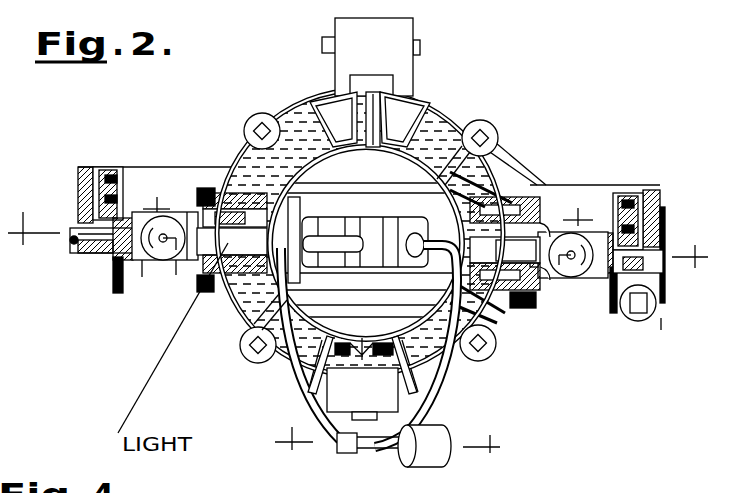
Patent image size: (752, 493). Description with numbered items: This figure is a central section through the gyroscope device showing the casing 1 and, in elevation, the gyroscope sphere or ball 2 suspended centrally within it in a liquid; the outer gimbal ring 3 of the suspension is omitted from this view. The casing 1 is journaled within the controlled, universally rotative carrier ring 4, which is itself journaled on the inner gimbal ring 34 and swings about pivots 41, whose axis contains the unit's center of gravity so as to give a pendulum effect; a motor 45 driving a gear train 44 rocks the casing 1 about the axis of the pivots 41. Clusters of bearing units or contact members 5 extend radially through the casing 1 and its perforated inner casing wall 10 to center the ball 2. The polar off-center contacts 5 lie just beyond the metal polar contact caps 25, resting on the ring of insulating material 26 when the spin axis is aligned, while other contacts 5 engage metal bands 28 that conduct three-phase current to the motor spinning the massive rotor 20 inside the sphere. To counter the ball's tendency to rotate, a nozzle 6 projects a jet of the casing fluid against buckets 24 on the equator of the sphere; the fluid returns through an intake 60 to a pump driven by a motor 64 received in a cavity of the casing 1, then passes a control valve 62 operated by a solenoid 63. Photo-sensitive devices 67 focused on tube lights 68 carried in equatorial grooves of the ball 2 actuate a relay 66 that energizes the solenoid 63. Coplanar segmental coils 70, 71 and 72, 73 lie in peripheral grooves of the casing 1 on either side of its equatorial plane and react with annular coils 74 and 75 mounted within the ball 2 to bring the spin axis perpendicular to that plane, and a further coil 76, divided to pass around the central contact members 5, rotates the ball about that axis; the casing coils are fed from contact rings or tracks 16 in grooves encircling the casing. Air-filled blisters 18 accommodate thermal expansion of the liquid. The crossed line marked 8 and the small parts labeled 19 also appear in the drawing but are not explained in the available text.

The casing 1 is at (220, 188).
The gyroscope sphere 2 is at (366, 243).
The outer gimbal ring 3 is at (358, 251).
The ring 4 is at (127, 290).
The bearing units 5 is at (312, 104).
The nozzle 6 is at (318, 252).
The vertical axis 8 is at (387, 451).
The inner casing wall 10 is at (300, 165).
The contact rings 16 is at (208, 188).
The blisters 18 is at (260, 113).
The bolt 19 is at (547, 226).
The rotor 20 is at (295, 197).
The buckets 24 is at (398, 230).
The metal polar contact caps 25 is at (395, 150).
The ring of insulating material 26 is at (360, 150).
The metal bands 28 is at (500, 160).
The inner gimbal ring 34 is at (78, 175).
The pivots 41 is at (80, 255).
The gear train 44 is at (657, 302).
The motor 45 is at (640, 321).
The intake 60 is at (455, 318).
The control valve 62 is at (345, 453).
The solenoid 63 is at (440, 430).
The motor 64 is at (335, 393).
The relay 66 is at (371, 82).
The photo-sensitive devices 67 is at (160, 260).
The tube lights 68 is at (232, 233).
The segmental coil 70 is at (198, 205).
The segmental coil 71 is at (505, 230).
The segmental coil 72 is at (164, 253).
The segmental coil 73 is at (505, 265).
The annular coil 74 is at (280, 205).
The annular coil 75 is at (282, 278).
The coil 76 is at (370, 387).